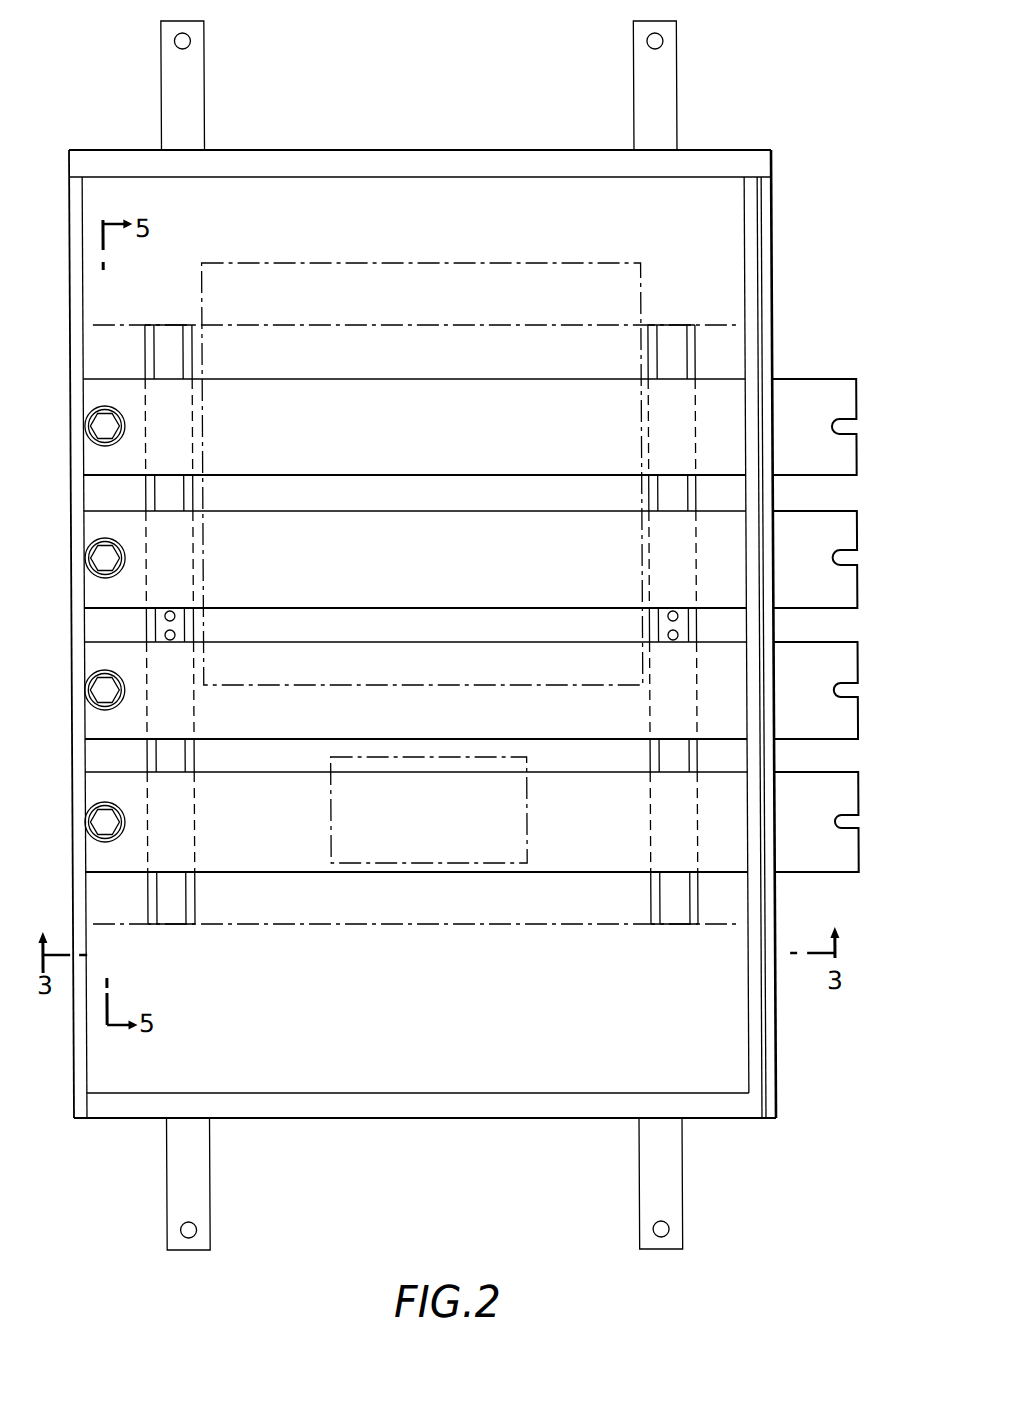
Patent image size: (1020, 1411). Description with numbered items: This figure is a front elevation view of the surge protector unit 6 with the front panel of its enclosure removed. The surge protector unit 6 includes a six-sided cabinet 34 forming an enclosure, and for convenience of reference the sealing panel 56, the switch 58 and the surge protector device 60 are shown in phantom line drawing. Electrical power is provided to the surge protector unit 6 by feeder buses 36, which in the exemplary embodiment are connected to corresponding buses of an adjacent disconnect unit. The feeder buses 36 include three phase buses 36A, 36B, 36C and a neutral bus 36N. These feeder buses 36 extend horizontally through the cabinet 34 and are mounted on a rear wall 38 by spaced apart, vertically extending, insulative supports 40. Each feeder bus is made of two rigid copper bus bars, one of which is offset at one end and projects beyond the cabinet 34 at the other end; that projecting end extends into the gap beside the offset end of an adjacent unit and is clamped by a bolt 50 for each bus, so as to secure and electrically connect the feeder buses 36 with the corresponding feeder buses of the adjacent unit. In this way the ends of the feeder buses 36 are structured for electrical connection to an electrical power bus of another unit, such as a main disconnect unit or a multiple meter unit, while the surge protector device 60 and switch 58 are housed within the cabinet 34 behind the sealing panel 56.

The surge protector unit 6 is at (415, 1208).
The cabinet 34 is at (792, 217).
The feeder buses 36 is at (501, 574).
The neutral bus 36N is at (838, 453).
The phase bus 36A is at (838, 586).
The phase bus 36B is at (838, 717).
The phase bus 36C is at (838, 850).
The rear wall 38 is at (435, 197).
The insulative supports 40 is at (175, 915).
The bolt 50 is at (98, 424).
The sealing panel 56 is at (425, 926).
The switch 58 is at (524, 833).
The surge protector device 60 is at (272, 262).